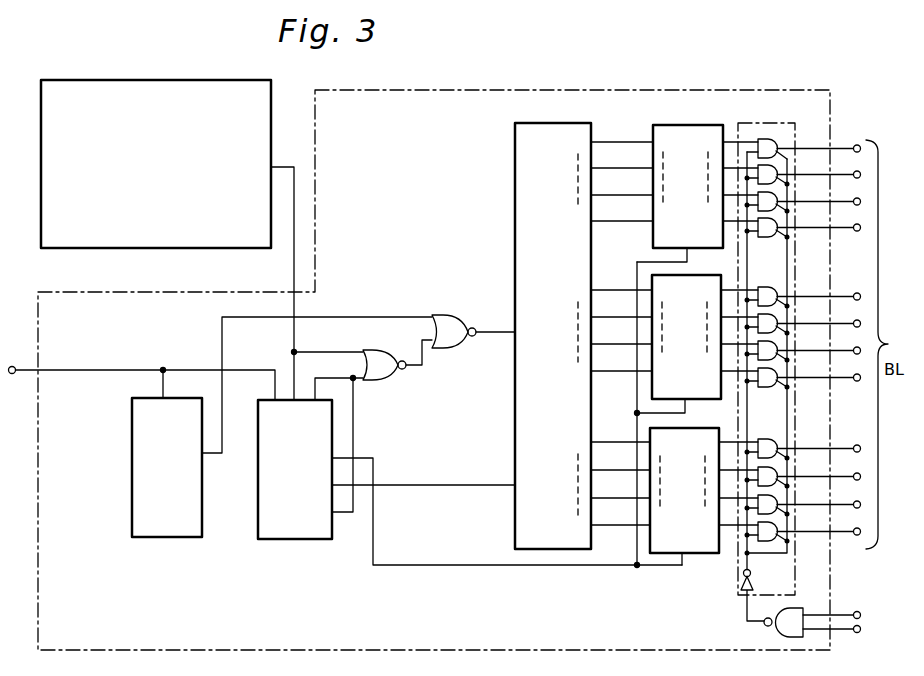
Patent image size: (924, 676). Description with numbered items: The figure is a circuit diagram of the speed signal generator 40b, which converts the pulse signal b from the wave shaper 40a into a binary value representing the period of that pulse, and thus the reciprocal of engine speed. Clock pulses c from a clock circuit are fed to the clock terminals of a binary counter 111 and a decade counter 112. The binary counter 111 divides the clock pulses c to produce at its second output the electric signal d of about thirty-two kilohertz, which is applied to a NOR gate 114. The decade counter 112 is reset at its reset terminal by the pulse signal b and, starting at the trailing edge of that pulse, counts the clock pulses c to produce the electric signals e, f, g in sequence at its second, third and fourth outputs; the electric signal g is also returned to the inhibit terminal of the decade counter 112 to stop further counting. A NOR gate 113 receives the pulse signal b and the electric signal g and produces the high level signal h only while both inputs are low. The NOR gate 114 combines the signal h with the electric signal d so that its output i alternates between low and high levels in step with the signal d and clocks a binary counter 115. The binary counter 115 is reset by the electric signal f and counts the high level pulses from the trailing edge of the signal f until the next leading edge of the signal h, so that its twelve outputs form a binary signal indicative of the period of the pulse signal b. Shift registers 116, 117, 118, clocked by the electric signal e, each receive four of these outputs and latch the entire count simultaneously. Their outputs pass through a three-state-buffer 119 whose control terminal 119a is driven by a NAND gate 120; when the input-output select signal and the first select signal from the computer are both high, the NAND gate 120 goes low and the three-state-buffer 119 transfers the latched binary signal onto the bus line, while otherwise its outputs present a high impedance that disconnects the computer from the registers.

The wave shaper 40a is at (176, 251).
The speed signal generator 40b is at (577, 91).
The binary counter 111 is at (172, 524).
The decade counter 112 is at (292, 525).
The NOR gate 113 is at (379, 353).
The NOR gate 114 is at (455, 315).
The binary counter 115 is at (551, 262).
The shift register 116 is at (696, 194).
The shift register 117 is at (695, 344).
The shift register 118 is at (693, 498).
The three-state-buffer 119 is at (766, 122).
The control terminal 119a is at (743, 601).
The NAND gate 120 is at (772, 627).
The pulse signal b is at (293, 262).
The clock pulses c is at (81, 371).
The electric signal d is at (210, 455).
The electric signal e is at (367, 458).
The electric signal f is at (407, 485).
The electric signal g is at (354, 404).
The high level signal h is at (422, 359).
The low and high level signals i is at (489, 335).